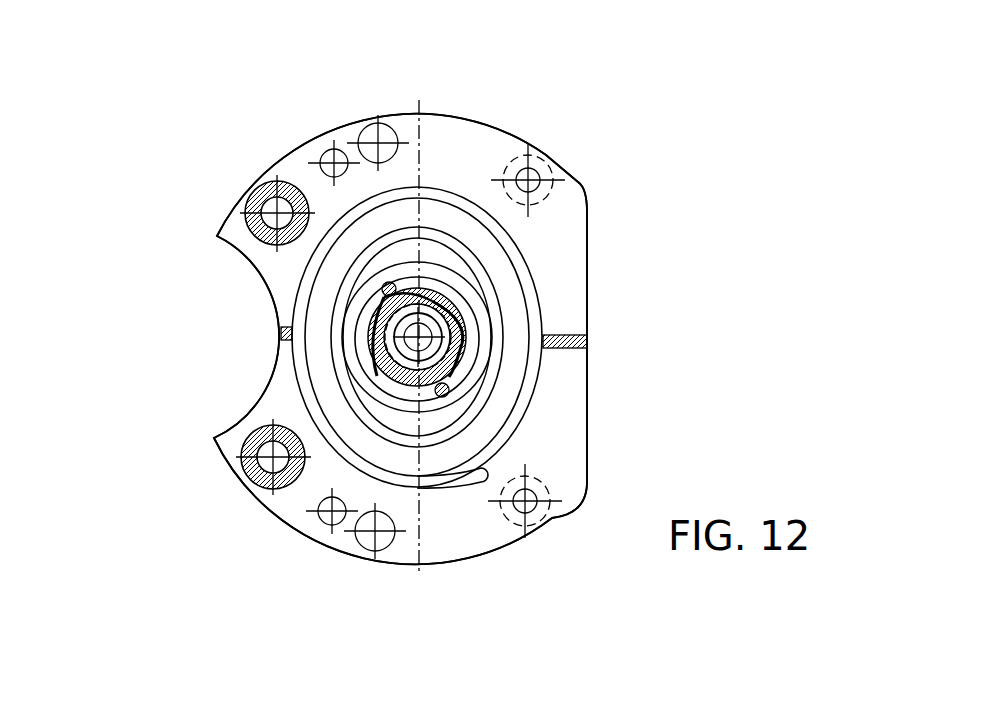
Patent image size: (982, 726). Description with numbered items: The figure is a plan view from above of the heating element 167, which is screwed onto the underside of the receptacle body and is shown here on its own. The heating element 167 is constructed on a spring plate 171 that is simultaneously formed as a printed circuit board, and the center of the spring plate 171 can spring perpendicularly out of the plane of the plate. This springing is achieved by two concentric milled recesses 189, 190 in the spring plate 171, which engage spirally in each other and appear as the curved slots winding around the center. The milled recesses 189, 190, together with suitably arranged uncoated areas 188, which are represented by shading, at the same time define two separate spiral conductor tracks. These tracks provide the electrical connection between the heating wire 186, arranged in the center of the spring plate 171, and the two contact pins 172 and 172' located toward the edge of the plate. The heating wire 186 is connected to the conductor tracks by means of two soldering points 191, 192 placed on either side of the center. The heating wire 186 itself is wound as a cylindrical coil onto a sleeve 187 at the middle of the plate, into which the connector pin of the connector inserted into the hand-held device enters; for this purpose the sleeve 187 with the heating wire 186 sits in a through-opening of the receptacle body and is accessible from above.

The heating element 167 is at (627, 200).
The spring plate 171 is at (493, 143).
The contact pin 172 is at (213, 209).
The contact pin 172' is at (189, 468).
The heating wire 186 is at (384, 297).
The sleeve 187 is at (414, 294).
The uncoated areas 188 is at (371, 363).
The milled recess 189 is at (528, 285).
The milled recess 190 is at (327, 437).
The soldering point 191 is at (388, 283).
The soldering point 192 is at (444, 397).